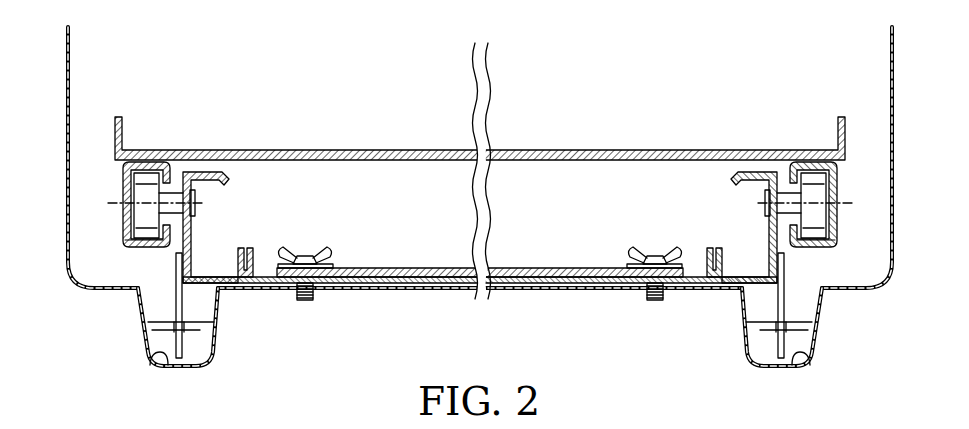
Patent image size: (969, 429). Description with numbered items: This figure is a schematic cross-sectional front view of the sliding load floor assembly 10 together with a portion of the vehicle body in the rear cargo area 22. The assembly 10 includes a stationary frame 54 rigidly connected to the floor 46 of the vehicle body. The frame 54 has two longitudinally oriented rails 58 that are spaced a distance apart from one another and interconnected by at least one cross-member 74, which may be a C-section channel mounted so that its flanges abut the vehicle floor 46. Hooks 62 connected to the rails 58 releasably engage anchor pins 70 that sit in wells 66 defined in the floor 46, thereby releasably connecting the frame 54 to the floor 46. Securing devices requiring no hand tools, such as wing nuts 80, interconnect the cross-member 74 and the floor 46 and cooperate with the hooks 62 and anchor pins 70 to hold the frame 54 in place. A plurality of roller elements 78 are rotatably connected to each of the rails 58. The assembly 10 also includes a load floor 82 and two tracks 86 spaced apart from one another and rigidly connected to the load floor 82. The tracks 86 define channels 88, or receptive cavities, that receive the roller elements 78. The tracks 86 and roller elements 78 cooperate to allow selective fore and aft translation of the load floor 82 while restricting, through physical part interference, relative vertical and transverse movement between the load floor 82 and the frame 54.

The sliding load floor assembly 10 is at (212, 105).
The rear cargo area 22 is at (446, 104).
The floor 46 is at (382, 290).
The stationary frame 54 is at (400, 240).
The rails 58 is at (192, 241).
The hooks 62 is at (175, 297).
The wells 66 is at (148, 360).
The anchor pins 70 is at (202, 328).
The cross-member 74 is at (447, 268).
The roller elements 78 is at (132, 213).
The wing nuts 80 is at (322, 247).
The load floor 82 is at (567, 151).
The tracks 86 is at (126, 181).
The channels 88 is at (132, 238).